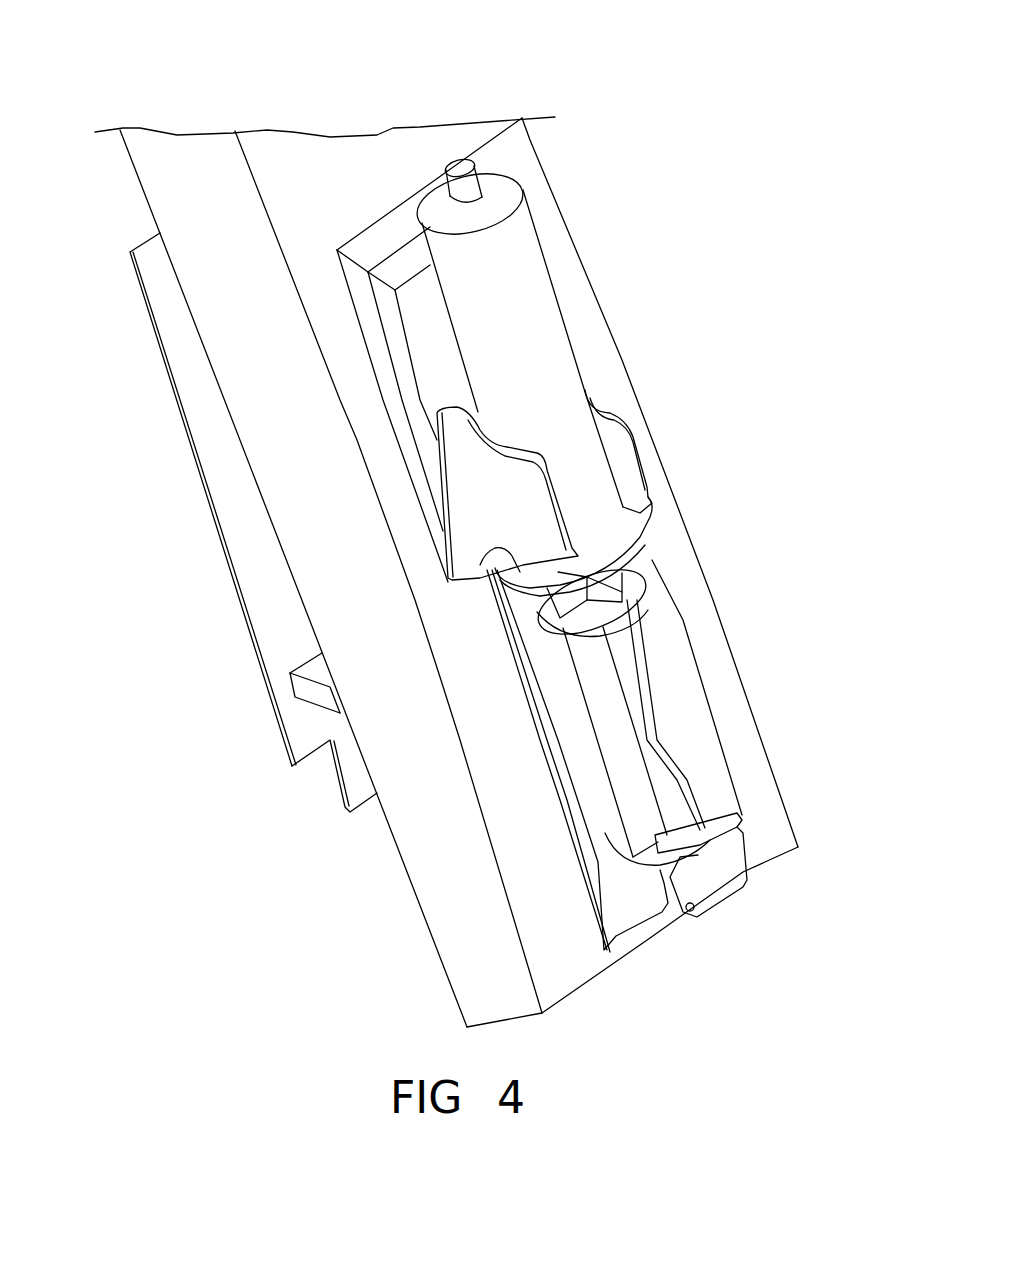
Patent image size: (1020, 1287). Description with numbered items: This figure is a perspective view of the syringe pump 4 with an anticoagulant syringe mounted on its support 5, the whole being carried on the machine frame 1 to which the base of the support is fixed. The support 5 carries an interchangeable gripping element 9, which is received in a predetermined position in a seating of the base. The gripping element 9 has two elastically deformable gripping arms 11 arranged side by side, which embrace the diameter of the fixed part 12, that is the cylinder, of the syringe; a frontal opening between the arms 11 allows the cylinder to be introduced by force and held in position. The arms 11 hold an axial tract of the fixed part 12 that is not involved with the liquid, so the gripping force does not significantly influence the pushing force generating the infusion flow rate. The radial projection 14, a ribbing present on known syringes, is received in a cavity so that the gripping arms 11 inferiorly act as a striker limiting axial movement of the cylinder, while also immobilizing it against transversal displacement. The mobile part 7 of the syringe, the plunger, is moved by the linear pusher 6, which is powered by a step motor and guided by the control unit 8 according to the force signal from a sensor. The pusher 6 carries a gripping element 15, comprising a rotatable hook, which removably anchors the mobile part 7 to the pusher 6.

The frame / mounting plate 1 is at (643, 110).
The syringe pump 4 is at (688, 432).
The support 5 is at (512, 511).
The linear pusher 6 is at (587, 775).
The mobile part of the syringe 7 is at (640, 695).
The control unit 8 is at (217, 585).
The gripping element 9 is at (437, 490).
The gripping arms 11 is at (620, 407).
The fixed part of the syringe 12 is at (513, 290).
The radial projection 14 is at (642, 533).
The gripping element of the pusher 15 is at (732, 892).